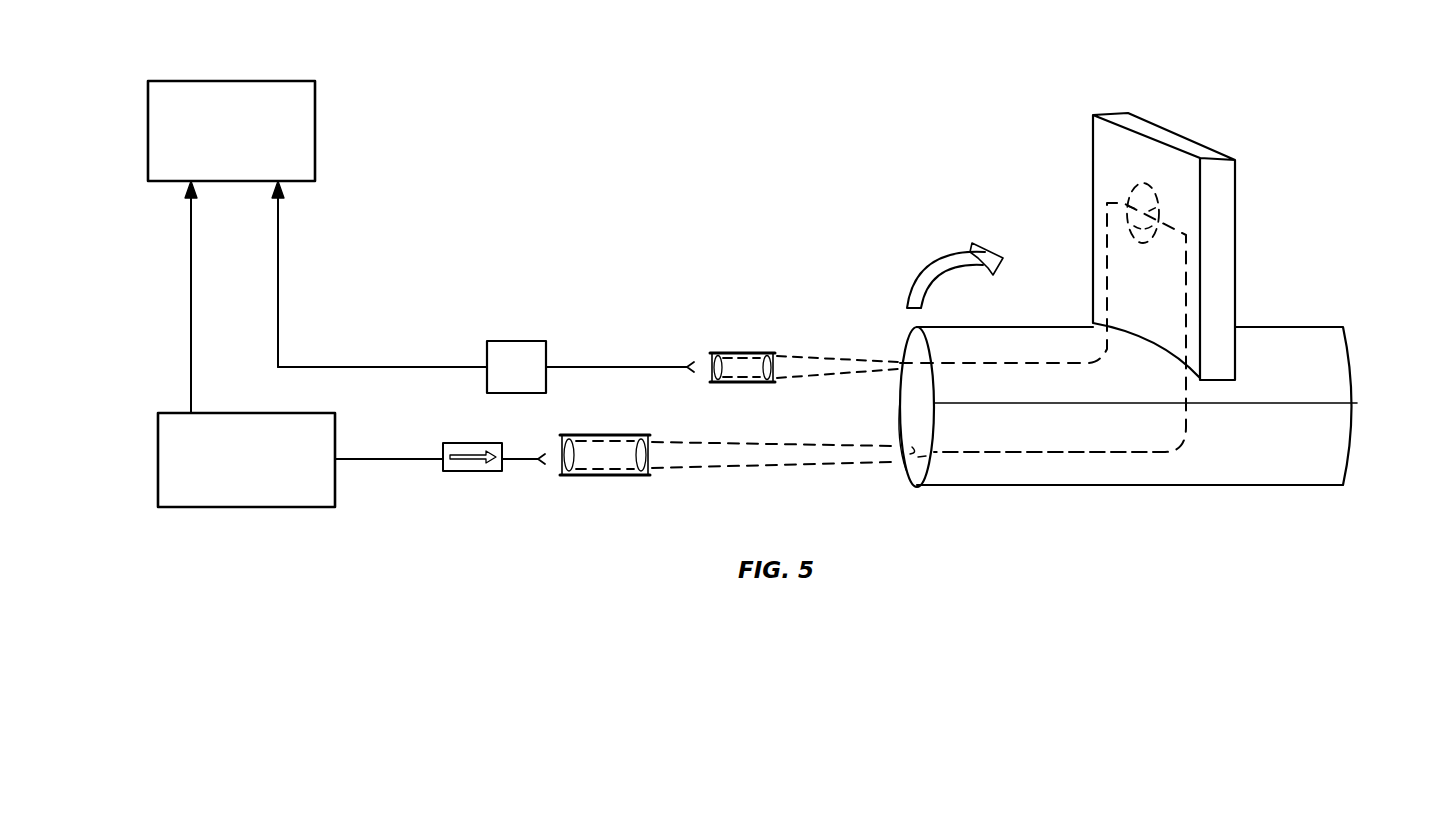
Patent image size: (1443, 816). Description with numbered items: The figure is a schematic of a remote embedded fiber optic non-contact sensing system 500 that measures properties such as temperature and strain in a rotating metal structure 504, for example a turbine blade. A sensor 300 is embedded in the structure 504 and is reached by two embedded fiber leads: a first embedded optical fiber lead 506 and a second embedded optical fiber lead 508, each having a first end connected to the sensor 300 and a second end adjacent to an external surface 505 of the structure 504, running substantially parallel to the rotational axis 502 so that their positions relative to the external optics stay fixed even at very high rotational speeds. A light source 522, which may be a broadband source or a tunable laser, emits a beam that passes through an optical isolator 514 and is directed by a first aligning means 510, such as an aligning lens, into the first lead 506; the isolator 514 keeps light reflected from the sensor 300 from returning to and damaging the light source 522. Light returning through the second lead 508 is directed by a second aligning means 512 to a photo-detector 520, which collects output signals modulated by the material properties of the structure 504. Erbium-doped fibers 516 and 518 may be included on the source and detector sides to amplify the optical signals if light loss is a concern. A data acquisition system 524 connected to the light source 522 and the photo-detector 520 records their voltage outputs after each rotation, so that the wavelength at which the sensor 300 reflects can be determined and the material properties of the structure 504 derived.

The remote embedded fiber optic non-contact sensing system 500 is at (570, 105).
The data acquisition system 524 is at (287, 135).
The light source 522 is at (163, 466).
The photo-detector 520 is at (516, 341).
The Erbium-doped fiber 518 is at (631, 367).
The second aligning means 512 is at (748, 353).
The Erbium-doped fiber 516 is at (396, 459).
The optical isolator 514 is at (474, 471).
The first aligning means 510 is at (600, 475).
The rotational axis 502 is at (1355, 403).
The second embedded optical fiber lead 508 is at (992, 363).
The first embedded optical fiber lead 506 is at (1105, 452).
The external surface 505 is at (912, 411).
The rotating metal structure 504 is at (1222, 283).
The sensor 300 is at (1144, 183).